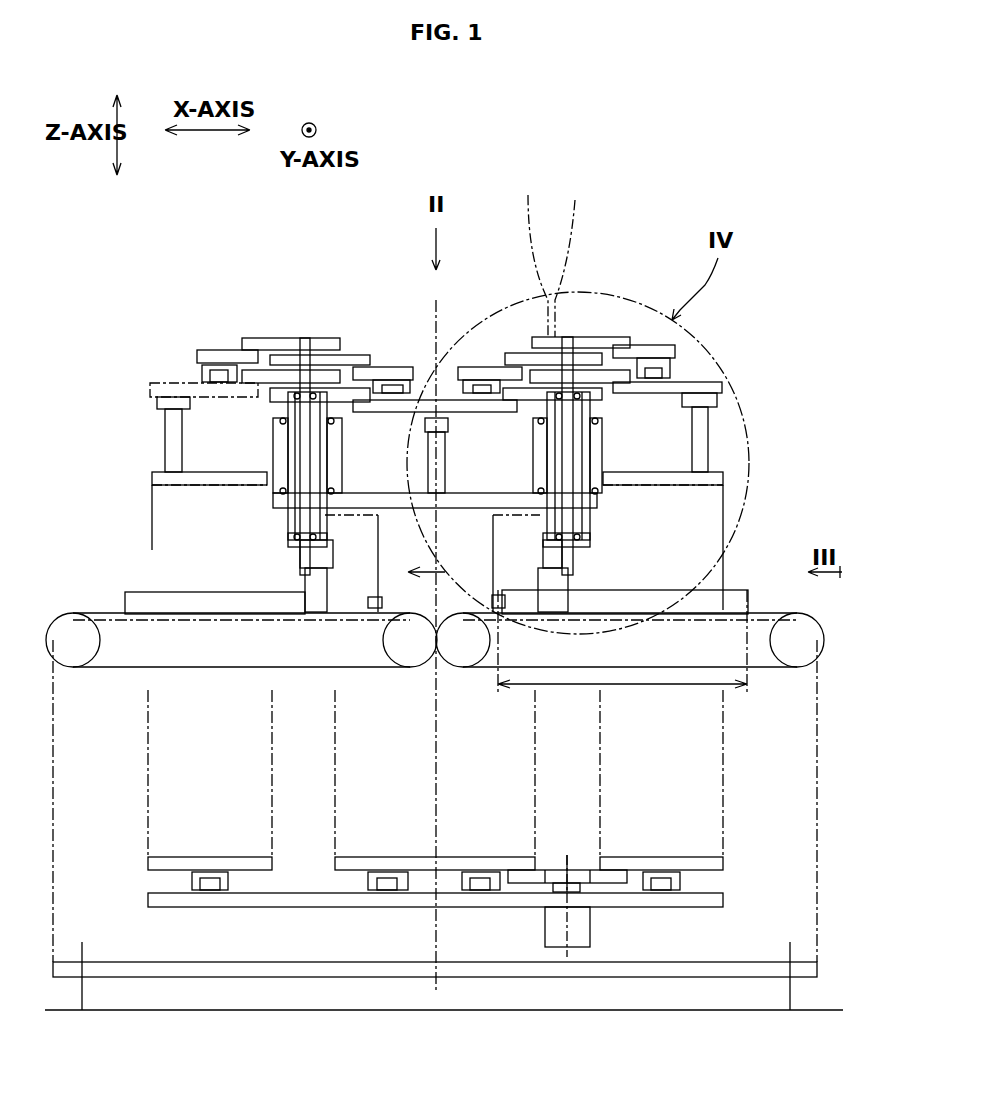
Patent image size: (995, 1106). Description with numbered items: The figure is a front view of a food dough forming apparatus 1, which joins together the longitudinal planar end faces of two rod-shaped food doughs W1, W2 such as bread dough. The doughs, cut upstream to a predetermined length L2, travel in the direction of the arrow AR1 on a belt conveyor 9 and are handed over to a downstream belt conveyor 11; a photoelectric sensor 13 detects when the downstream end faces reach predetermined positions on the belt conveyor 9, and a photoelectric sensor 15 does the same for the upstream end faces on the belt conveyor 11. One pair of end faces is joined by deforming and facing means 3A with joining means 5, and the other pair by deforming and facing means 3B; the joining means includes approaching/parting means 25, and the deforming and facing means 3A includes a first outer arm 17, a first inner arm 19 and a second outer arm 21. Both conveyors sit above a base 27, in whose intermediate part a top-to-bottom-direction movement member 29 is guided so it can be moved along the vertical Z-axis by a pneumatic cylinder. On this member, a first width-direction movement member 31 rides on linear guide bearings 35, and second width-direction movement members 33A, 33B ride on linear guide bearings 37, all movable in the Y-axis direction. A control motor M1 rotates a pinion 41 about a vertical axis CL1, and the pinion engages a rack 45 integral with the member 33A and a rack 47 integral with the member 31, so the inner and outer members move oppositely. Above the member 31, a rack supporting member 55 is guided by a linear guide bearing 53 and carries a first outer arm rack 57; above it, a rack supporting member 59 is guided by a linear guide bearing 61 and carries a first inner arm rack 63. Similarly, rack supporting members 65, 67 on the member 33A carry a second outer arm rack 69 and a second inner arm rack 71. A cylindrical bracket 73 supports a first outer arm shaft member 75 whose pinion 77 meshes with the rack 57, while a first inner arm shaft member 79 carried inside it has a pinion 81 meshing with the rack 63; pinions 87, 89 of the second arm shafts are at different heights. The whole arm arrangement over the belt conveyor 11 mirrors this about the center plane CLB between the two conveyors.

The food dough forming apparatus 1 is at (715, 203).
The deforming and facing means 3A is at (607, 370).
The deforming and facing means 3B is at (281, 407).
The joining means 5 is at (280, 316).
The belt conveyor 9 is at (794, 612).
The belt conveyor 11 is at (235, 684).
The photoelectric sensor 13 is at (500, 608).
The photoelectric sensor 15 is at (372, 608).
The first outer arm 17 is at (493, 580).
The first inner arm 19 is at (568, 580).
The second outer arm 21 is at (465, 489).
The approaching/parting means 25 is at (498, 266).
The base 27 is at (328, 978).
The top-to-bottom-direction movement member 29 is at (226, 908).
The first width-direction movement member 31 is at (535, 440).
The second width-direction movement member 33A is at (723, 478).
The second width-direction movement member 33B is at (152, 472).
The linear guide bearings 35 is at (360, 858).
The linear guide bearings 37 is at (192, 880).
The pinion 41 is at (568, 860).
The rack 45 is at (615, 870).
The rack 47 is at (525, 885).
The linear guide bearing 53 is at (422, 420).
The rack supporting member 55 is at (458, 368).
The first outer arm rack 57 is at (515, 412).
The rack supporting member 59 is at (480, 366).
The linear guide bearing 61 is at (446, 420).
The first inner arm rack 63 is at (515, 386).
The rack supporting member 65 is at (722, 386).
The rack supporting member 67 is at (672, 350).
The second outer arm rack 69 is at (603, 396).
The second inner arm rack 71 is at (635, 340).
The cylindrical bracket 73 is at (603, 472).
The first outer arm shaft member 75 is at (590, 540).
The pinion 77 is at (598, 400).
The first inner arm shaft member 79 is at (597, 500).
The pinion 81 is at (590, 370).
The pinion 87 is at (530, 251).
The pinion 89 is at (592, 300).
The food dough W1 is at (125, 592).
The food dough W2 is at (748, 592).
The control motor M1 is at (590, 920).
The axis CL1 is at (575, 940).
The center plane CLB is at (440, 770).
The length L2 is at (622, 653).
The arrow AR1 is at (440, 572).